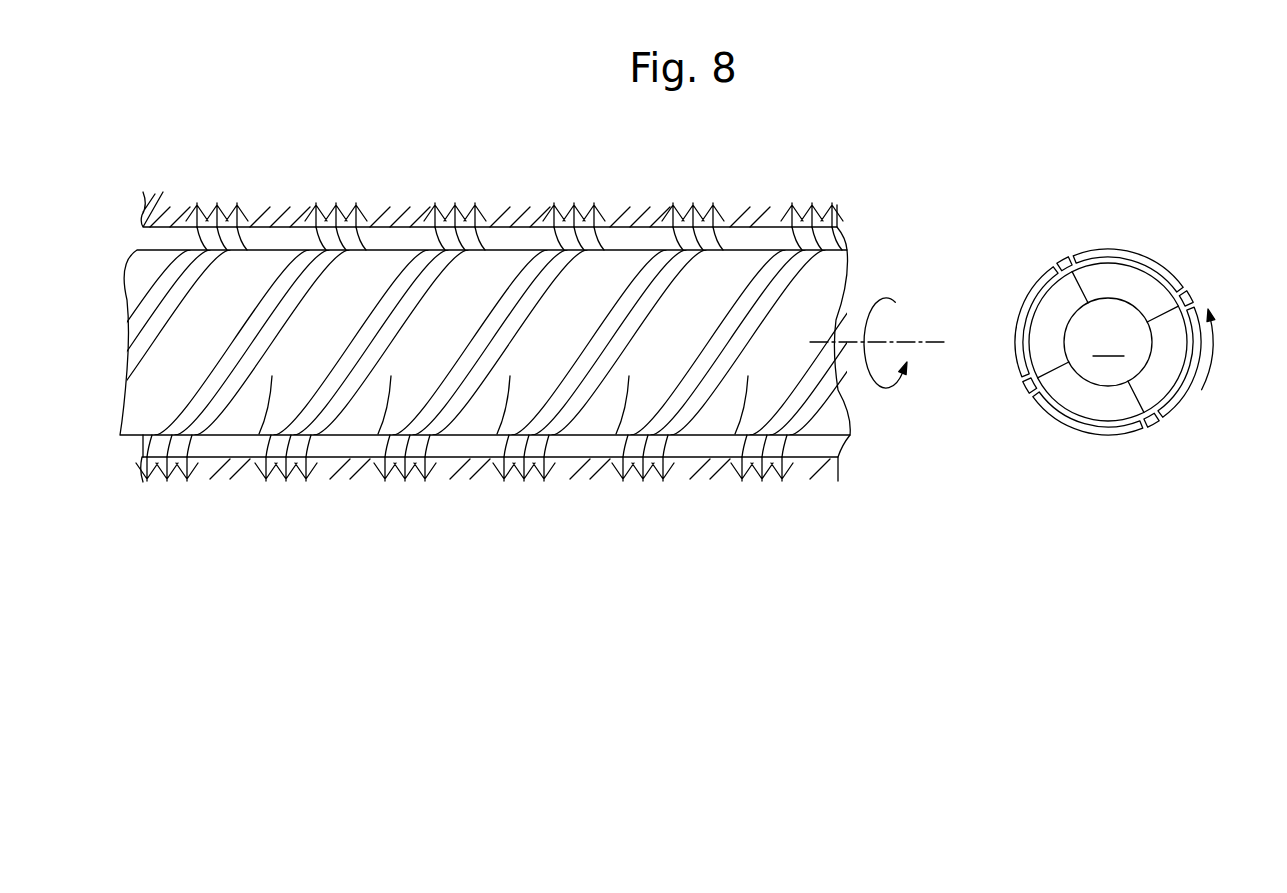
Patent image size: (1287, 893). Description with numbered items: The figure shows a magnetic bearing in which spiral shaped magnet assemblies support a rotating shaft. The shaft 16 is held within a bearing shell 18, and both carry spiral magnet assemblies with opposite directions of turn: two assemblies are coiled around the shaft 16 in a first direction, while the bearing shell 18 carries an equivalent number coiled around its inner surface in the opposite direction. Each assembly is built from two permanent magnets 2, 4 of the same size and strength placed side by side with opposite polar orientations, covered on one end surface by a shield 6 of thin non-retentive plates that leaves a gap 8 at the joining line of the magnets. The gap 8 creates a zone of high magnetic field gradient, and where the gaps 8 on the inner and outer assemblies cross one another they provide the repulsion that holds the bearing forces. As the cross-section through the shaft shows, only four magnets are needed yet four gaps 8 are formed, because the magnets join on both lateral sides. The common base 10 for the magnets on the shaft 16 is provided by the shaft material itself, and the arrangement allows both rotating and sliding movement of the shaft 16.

The permanent magnet 2 is at (1108, 276).
The permanent magnet 4 is at (1062, 300).
The shield 6 is at (1157, 268).
The gap 8 is at (632, 238).
The base plate 10 is at (1108, 342).
The shaft 16 is at (168, 378).
The bearing shell 18 is at (407, 214).